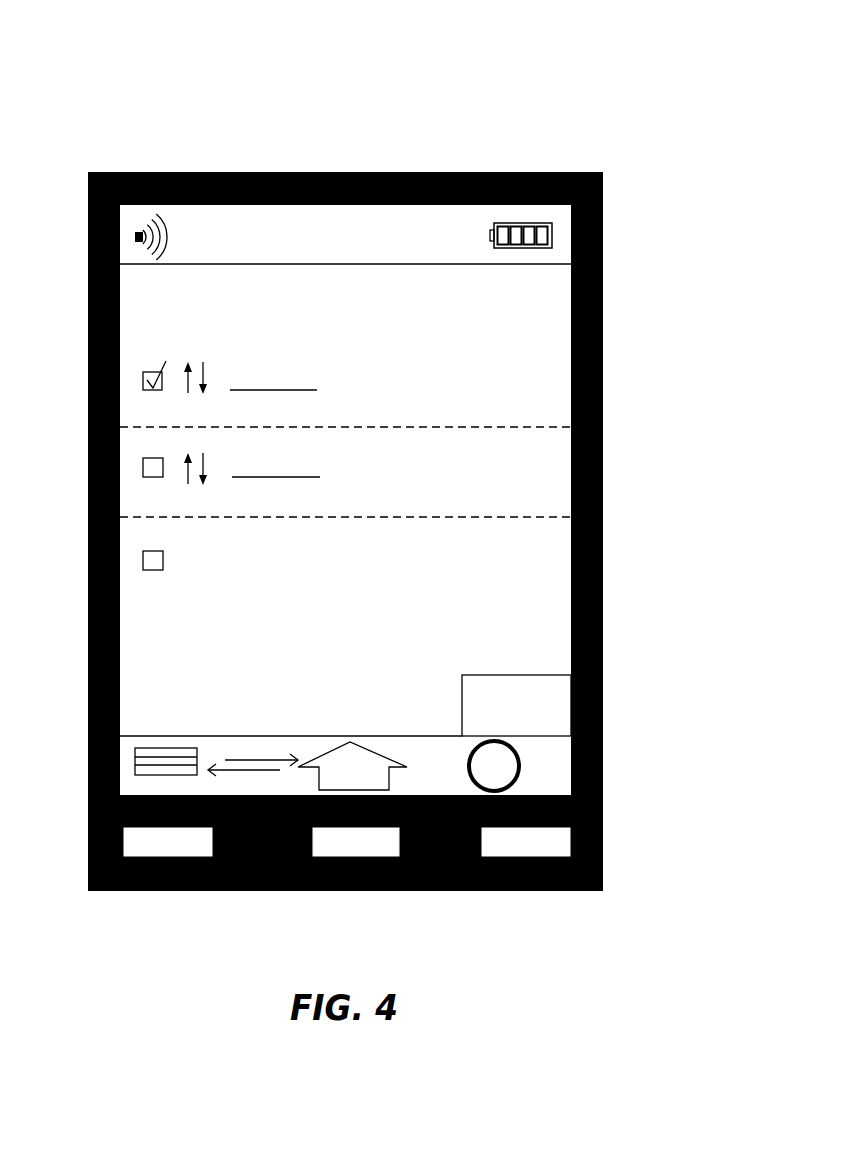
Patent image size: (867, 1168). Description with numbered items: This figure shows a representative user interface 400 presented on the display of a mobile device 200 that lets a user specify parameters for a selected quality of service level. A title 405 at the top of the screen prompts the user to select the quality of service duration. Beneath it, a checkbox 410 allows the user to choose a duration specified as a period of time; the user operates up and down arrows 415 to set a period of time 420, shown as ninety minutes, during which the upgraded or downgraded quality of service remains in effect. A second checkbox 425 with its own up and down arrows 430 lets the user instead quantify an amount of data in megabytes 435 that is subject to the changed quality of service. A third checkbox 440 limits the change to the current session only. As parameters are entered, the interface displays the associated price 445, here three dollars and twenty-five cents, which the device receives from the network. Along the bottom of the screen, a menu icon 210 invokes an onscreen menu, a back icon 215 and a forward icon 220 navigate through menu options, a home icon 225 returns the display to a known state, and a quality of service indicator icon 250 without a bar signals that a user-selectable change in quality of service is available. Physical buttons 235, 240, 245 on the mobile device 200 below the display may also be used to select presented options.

The mobile device 200 is at (622, 107).
The menu icon 210 is at (155, 734).
The back icon 215 is at (212, 749).
The forward icon 220 is at (278, 732).
The home icon 225 is at (384, 742).
The button 235 is at (147, 844).
The button 240 is at (343, 844).
The button 245 is at (507, 844).
The quality of service indicator icon 250 is at (522, 770).
The user interface 400 is at (556, 282).
The select QoS duration title 405 is at (432, 260).
The checkbox 410 is at (143, 389).
The up and down arrows 415 is at (212, 368).
The period of time 420 is at (410, 382).
The checkbox 425 is at (143, 471).
The up and down arrows 430 is at (213, 462).
The megabytes 435 is at (312, 457).
The checkbox 440 is at (143, 563).
The price 445 is at (557, 710).